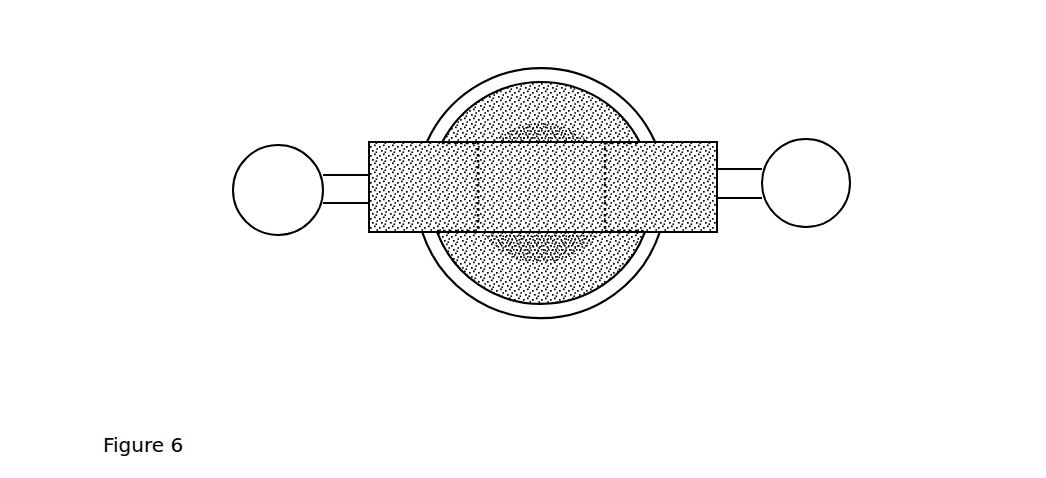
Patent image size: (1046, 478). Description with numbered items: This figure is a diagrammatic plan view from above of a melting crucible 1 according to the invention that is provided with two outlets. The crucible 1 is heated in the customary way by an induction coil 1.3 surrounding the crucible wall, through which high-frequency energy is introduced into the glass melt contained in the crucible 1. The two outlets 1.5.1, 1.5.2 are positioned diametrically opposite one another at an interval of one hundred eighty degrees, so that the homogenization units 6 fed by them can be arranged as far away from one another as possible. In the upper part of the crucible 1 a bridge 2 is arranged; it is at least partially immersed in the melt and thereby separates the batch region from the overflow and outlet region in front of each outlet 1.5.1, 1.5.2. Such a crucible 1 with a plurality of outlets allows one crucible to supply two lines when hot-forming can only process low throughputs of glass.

The crucible 1 is at (522, 82).
The induction coil 1.3 is at (632, 98).
The first outlet 1.5.1 is at (380, 150).
The second outlet 1.5.2 is at (717, 149).
The bridge 2 is at (450, 237).
The homogenization unit 6 is at (265, 173).